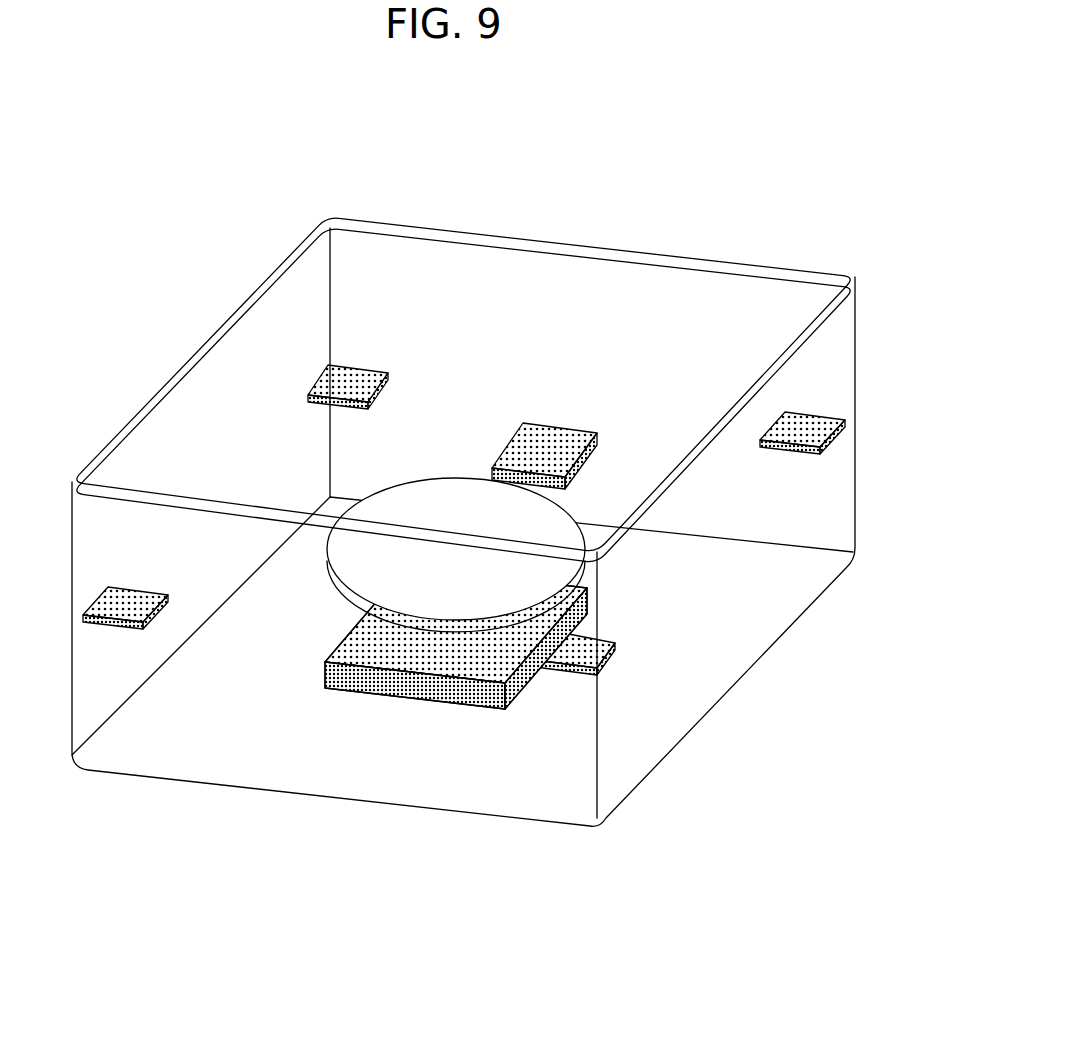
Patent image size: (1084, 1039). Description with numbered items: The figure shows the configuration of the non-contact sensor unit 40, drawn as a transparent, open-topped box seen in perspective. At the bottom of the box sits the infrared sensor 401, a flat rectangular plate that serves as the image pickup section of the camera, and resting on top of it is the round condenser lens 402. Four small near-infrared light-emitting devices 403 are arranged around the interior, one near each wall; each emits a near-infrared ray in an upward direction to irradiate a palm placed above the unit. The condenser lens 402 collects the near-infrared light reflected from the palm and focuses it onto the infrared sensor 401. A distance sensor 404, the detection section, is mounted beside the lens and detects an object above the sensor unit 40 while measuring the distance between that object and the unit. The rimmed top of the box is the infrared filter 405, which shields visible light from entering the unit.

The non-contact sensor unit 40 is at (515, 582).
The infrared sensor 401 is at (473, 707).
The condenser lens 402 is at (344, 600).
The near-infrared light-emitting device 403 is at (377, 397).
The distance sensor 404 is at (557, 425).
The infrared filter 405 is at (657, 245).